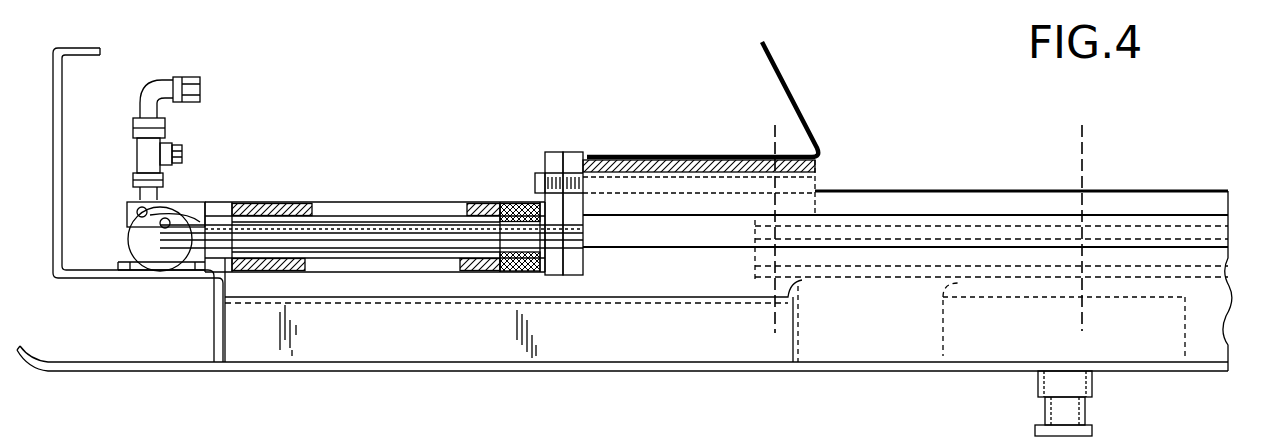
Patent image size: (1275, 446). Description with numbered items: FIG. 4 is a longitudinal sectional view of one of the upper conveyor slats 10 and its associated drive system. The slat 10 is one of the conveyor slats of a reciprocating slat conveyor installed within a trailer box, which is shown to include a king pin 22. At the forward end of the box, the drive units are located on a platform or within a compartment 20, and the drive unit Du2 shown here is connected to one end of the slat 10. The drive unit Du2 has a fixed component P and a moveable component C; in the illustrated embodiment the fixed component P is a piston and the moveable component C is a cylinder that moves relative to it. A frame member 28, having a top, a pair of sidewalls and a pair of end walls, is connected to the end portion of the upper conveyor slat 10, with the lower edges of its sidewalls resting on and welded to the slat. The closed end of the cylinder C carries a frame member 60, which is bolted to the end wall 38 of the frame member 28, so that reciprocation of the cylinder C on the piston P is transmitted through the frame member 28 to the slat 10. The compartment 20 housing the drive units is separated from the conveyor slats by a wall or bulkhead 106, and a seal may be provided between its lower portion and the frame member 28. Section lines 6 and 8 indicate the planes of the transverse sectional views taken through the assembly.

The upper conveyor slat 10 is at (1131, 205).
The compartment 20 is at (395, 135).
The king pin 22 is at (1035, 388).
The frame member 28 is at (822, 182).
The end wall 38 is at (583, 152).
The frame member 60 is at (548, 165).
The bulkhead 106 is at (790, 85).
The section line 6- 6 is at (775, 125).
The section line 8- 8 is at (1082, 125).
The drive unit Du2 is at (310, 200).
The moveable component C is at (446, 200).
The fixed component P is at (410, 252).